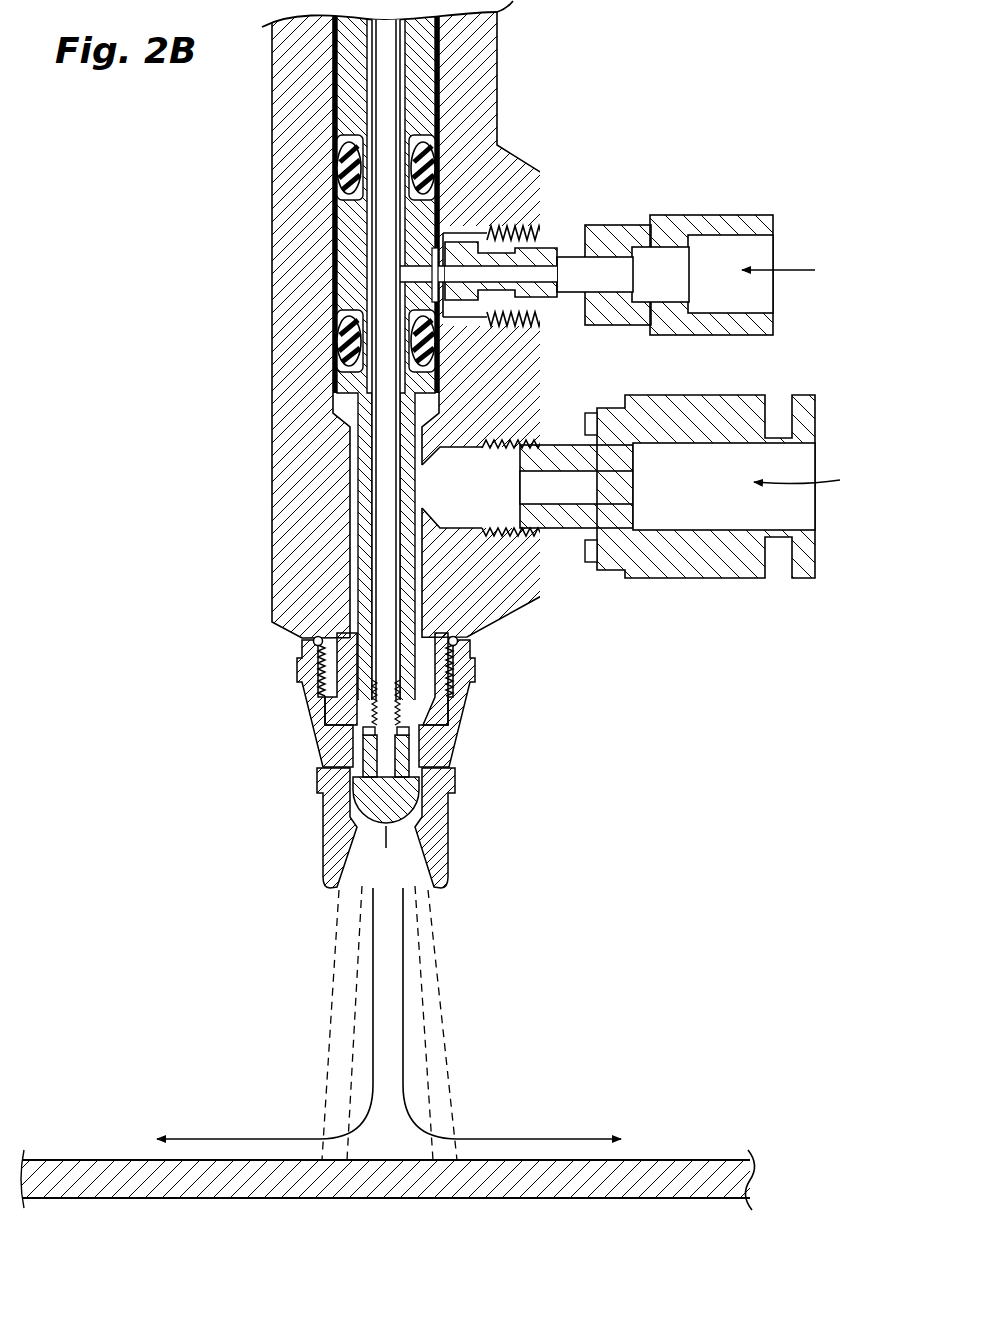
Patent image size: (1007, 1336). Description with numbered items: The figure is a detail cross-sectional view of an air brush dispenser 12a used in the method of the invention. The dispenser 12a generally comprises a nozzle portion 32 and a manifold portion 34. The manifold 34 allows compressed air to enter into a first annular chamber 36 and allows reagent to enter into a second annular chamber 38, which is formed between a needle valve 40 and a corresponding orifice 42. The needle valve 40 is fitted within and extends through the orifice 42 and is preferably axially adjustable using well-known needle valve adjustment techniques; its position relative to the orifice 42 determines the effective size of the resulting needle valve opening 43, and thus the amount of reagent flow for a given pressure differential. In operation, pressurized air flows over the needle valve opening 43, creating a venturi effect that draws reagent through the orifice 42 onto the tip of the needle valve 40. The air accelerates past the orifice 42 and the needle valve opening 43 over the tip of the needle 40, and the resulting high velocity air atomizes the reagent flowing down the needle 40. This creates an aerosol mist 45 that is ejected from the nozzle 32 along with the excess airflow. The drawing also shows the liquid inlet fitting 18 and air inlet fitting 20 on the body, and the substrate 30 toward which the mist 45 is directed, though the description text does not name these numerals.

The air brush dispenser 12a is at (208, 232).
The liquid inlet fitting 18 is at (707, 214).
The air inlet fitting 20 is at (737, 572).
The substrate 30 is at (704, 1157).
The nozzle portion 32 is at (441, 812).
The manifold portion 34 is at (467, 712).
The first annular chamber 36 is at (347, 679).
The second annular chamber 38 is at (372, 632).
The needle valve 40 is at (383, 596).
The orifice 42 is at (407, 753).
The needle valve opening 43 is at (398, 834).
The aerosol mist 45 is at (438, 1000).